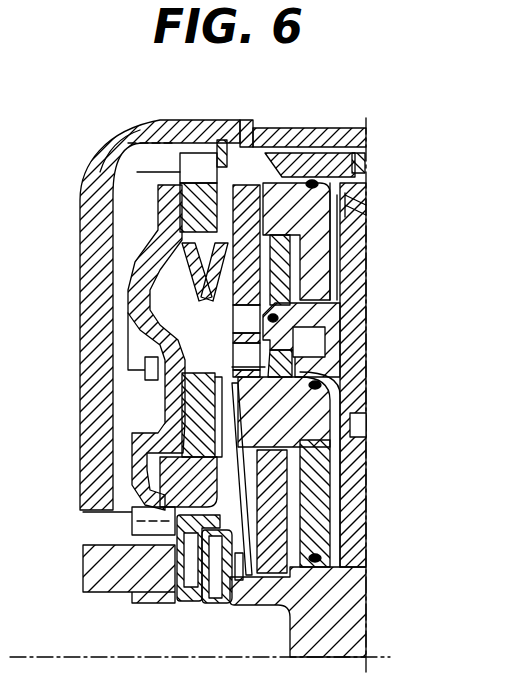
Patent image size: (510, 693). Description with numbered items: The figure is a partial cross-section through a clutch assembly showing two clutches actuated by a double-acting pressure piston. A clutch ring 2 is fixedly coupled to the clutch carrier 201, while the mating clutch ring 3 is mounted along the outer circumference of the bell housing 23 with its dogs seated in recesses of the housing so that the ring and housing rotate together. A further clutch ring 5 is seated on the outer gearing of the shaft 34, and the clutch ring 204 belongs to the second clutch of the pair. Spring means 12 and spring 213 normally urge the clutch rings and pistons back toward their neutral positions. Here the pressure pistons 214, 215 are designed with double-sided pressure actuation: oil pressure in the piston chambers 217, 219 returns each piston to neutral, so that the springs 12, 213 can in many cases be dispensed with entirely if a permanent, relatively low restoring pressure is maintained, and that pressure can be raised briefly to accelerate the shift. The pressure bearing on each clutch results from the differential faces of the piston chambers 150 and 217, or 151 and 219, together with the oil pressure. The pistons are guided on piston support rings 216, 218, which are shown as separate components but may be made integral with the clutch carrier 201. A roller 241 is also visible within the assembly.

The clutch ring 2 is at (250, 185).
The clutch ring 3 is at (190, 122).
The clutch ring 5 is at (198, 467).
The spring means 12 is at (208, 286).
The bell housing 23 is at (95, 248).
The shaft 34 is at (110, 578).
The piston chamber 150 is at (345, 214).
The piston chamber 151 is at (335, 410).
The clutch carrier 201 is at (355, 590).
The clutch ring 204 is at (245, 407).
The spring 213 is at (185, 500).
The pressure piston 214 is at (357, 190).
The pressure piston 215 is at (350, 436).
The piston support ring 216 is at (320, 248).
The piston chamber 217 is at (325, 282).
The piston support ring 218 is at (285, 480).
The piston chamber 219 is at (300, 522).
The roller 241 is at (322, 344).